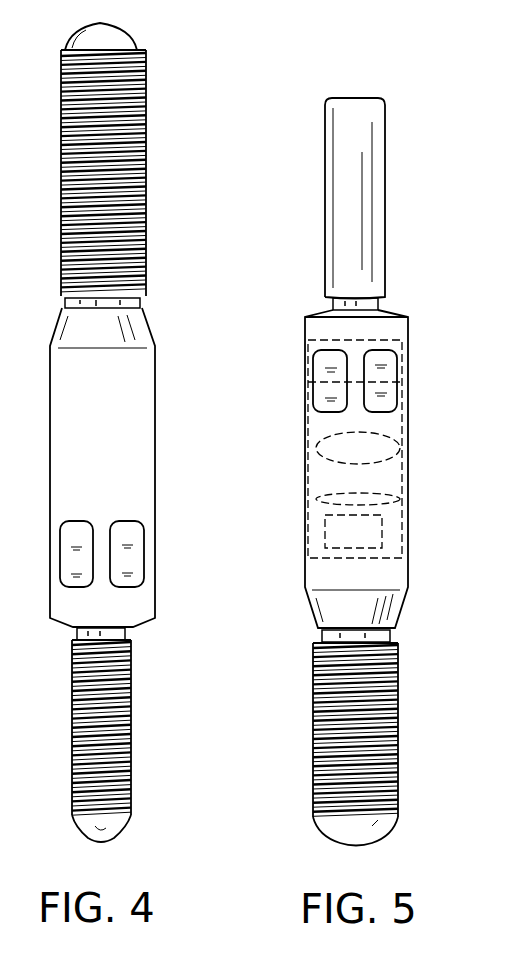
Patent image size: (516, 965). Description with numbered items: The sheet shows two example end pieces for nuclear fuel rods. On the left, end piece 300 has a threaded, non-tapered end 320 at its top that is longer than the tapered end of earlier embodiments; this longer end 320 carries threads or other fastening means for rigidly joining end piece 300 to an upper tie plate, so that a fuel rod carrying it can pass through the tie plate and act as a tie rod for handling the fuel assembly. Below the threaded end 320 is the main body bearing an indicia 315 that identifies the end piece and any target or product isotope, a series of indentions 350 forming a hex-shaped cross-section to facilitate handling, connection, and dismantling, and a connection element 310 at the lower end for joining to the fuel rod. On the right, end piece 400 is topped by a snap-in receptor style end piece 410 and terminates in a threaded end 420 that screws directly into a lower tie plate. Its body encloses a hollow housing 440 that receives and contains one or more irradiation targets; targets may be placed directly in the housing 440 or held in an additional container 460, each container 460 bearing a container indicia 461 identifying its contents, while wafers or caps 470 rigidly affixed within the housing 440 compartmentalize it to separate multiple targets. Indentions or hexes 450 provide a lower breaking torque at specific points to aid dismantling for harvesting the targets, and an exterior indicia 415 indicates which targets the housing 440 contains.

In FIG. 4, the end piece 300 is at (174, 417).
In FIG. 4, the connection element 310 is at (190, 625).
In FIG. 4, the indicia 315 is at (97, 443).
In FIG. 4, the threaded, non-tapered end 320 is at (188, 23).
In FIG. 4, the indentions 350 is at (130, 576).
In FIG. 5, the end piece 400 is at (422, 418).
In FIG. 5, the snap-in receptor style end piece 410 is at (382, 213).
In FIG. 5, the indicia 415 is at (380, 578).
In FIG. 5, the threaded end 420 is at (428, 625).
In FIG. 5, the housing 440 is at (403, 471).
In FIG. 5, the indentions (hexes) 450 is at (383, 375).
In FIG. 5, the container 460 is at (365, 530).
In FIG. 5, the container indicia 461 is at (368, 496).
In FIG. 5, the wafers or caps 470 is at (340, 450).